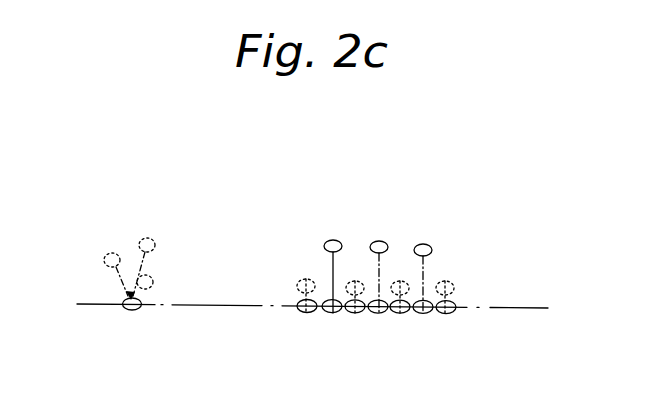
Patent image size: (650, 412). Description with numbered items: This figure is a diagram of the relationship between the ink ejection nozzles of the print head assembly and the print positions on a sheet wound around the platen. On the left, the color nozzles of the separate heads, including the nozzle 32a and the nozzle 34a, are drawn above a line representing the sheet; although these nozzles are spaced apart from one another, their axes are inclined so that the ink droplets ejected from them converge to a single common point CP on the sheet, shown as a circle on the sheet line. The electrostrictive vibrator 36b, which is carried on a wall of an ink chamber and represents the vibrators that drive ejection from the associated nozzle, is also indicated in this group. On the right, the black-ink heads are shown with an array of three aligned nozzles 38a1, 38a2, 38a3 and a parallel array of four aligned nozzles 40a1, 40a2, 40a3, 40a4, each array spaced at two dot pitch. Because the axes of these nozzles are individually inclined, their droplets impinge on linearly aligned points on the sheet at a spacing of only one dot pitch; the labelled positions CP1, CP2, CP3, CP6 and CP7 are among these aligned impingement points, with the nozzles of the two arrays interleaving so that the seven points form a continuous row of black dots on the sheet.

The nozzle 32a is at (148, 238).
The nozzle 34a is at (108, 253).
The electrostrictive vibrator 36b is at (153, 281).
The nozzle 38a1 is at (338, 236).
The nozzle 38a2 is at (385, 239).
The nozzle 38a3 is at (430, 243).
The nozzle 40a1 is at (298, 279).
The nozzle 40a2 is at (347, 281).
The nozzle 40a3 is at (410, 278).
The nozzle 40a4 is at (453, 286).
The common point CP is at (132, 310).
The print position CP1 is at (307, 313).
The print position CP2 is at (335, 313).
The print position CP3 is at (358, 313).
The print position CP6 is at (425, 313).
The print position CP7 is at (450, 313).